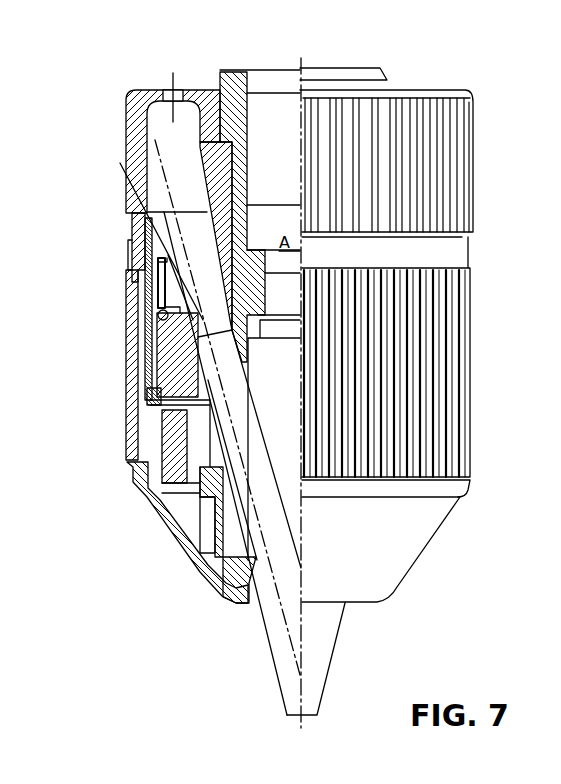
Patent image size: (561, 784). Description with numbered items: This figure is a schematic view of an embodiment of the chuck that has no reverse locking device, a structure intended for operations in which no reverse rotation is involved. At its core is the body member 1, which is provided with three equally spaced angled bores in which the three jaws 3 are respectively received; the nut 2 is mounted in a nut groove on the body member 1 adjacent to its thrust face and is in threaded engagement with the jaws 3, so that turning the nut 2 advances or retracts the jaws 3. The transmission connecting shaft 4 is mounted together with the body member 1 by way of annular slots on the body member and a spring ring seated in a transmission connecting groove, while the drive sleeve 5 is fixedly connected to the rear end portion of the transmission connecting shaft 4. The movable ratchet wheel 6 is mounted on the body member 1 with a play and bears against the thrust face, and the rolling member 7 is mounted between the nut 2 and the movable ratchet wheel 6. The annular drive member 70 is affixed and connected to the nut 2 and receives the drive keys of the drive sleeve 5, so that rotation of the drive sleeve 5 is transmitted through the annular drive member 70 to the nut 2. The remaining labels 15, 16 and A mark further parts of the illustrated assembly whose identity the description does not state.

The body member 1 is at (218, 190).
The nut 2 is at (157, 318).
The jaws 3 is at (128, 168).
The transmission connecting shaft 4 is at (232, 123).
The drive sleeve 5 is at (135, 177).
The movable ratchet wheel 6 is at (130, 242).
The rolling member 7 is at (145, 292).
The annular drive member 70 is at (173, 353).
The outer sleeve wall 15 is at (135, 440).
The rear cap 16 is at (168, 530).
The point A is at (128, 303).